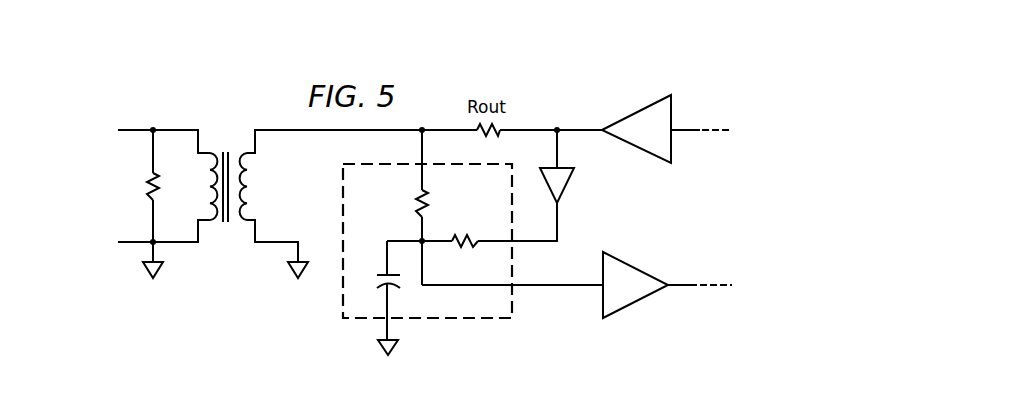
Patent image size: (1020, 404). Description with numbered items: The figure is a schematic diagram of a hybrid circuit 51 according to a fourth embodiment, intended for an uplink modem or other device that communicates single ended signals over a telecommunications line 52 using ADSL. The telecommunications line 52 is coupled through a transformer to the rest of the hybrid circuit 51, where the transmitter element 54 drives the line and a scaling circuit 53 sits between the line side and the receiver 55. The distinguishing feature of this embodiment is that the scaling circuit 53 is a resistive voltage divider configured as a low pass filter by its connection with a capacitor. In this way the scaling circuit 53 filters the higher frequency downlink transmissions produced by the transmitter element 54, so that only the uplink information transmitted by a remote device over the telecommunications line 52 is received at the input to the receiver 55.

The hybrid circuit 51 is at (238, 73).
The telecommunications line 52 is at (172, 128).
The scaling circuit 53 is at (449, 325).
The transmitter 54 is at (637, 108).
The receiver 55 is at (637, 306).